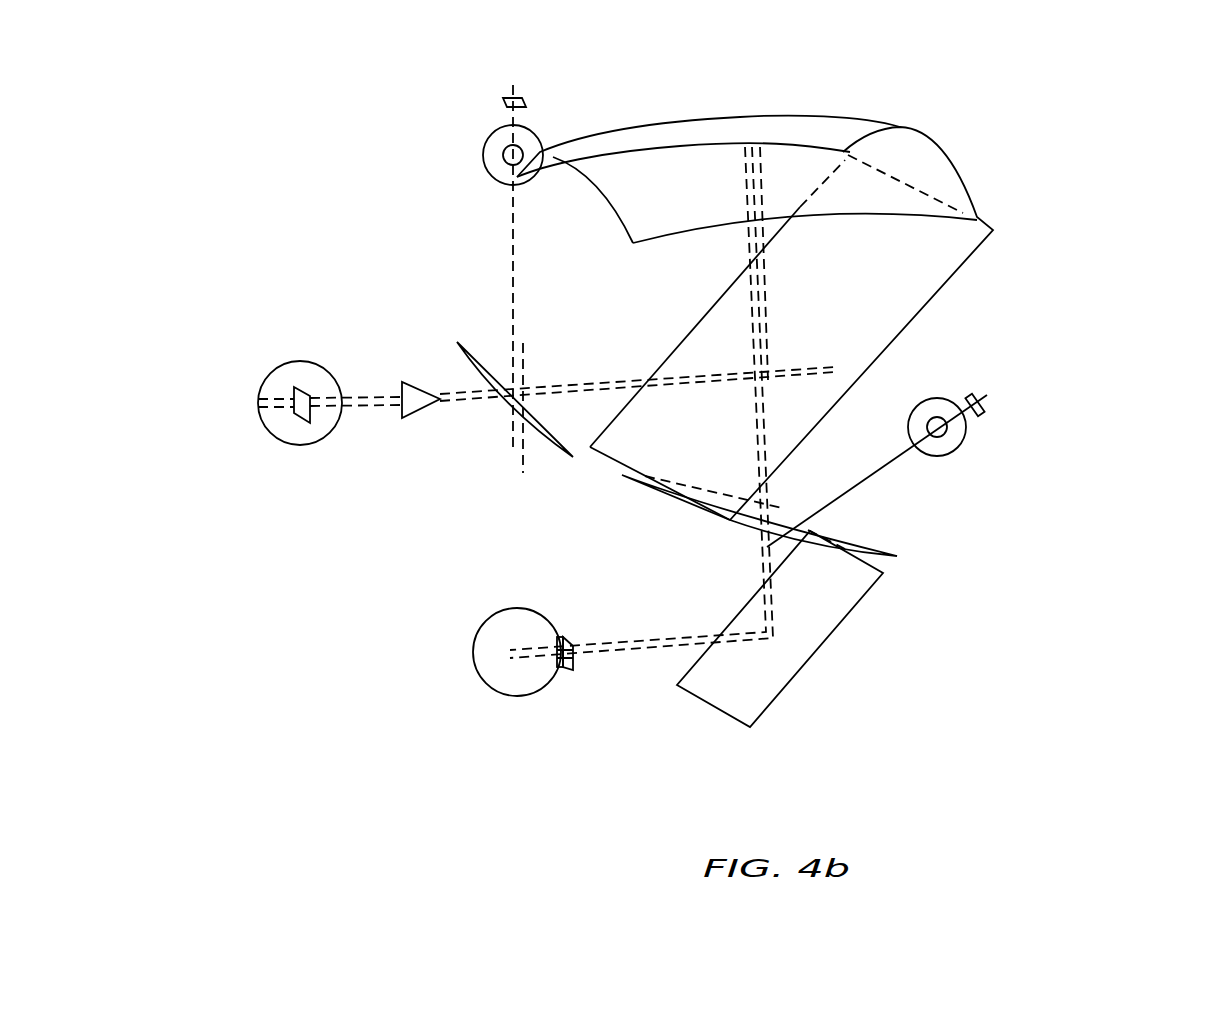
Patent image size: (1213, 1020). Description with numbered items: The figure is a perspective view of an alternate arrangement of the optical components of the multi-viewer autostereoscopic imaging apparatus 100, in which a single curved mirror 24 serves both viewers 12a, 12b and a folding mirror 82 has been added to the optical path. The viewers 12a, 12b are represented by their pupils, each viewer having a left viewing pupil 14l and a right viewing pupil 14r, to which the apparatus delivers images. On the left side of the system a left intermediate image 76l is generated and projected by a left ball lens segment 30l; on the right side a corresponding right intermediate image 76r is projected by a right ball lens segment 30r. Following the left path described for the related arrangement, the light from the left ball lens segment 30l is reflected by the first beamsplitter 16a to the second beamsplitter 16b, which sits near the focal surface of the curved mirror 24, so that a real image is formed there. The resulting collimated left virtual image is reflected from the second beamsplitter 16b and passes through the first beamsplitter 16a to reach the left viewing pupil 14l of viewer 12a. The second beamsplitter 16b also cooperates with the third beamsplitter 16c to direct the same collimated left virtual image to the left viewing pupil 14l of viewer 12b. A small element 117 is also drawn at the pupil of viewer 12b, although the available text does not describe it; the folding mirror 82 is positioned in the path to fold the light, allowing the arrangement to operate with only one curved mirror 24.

The multi-viewer autostereoscopic imaging apparatus 100 is at (1105, 645).
The curved mirror 24 is at (868, 116).
The left ball lens segment 30l is at (500, 178).
The right ball lens segment 30r is at (966, 440).
The left intermediate image 76l is at (503, 102).
The right intermediate image 76r is at (984, 412).
The first beamsplitter 16a is at (683, 338).
The second beamsplitter 16b is at (962, 262).
The third beamsplitter 16c is at (860, 543).
The folding mirror 82 is at (860, 600).
The viewer 12a is at (215, 375).
The viewer 12b is at (430, 622).
The left viewing pupil 14l is at (298, 446).
The right viewing pupil 14r is at (513, 697).
The lens 117 is at (560, 637).